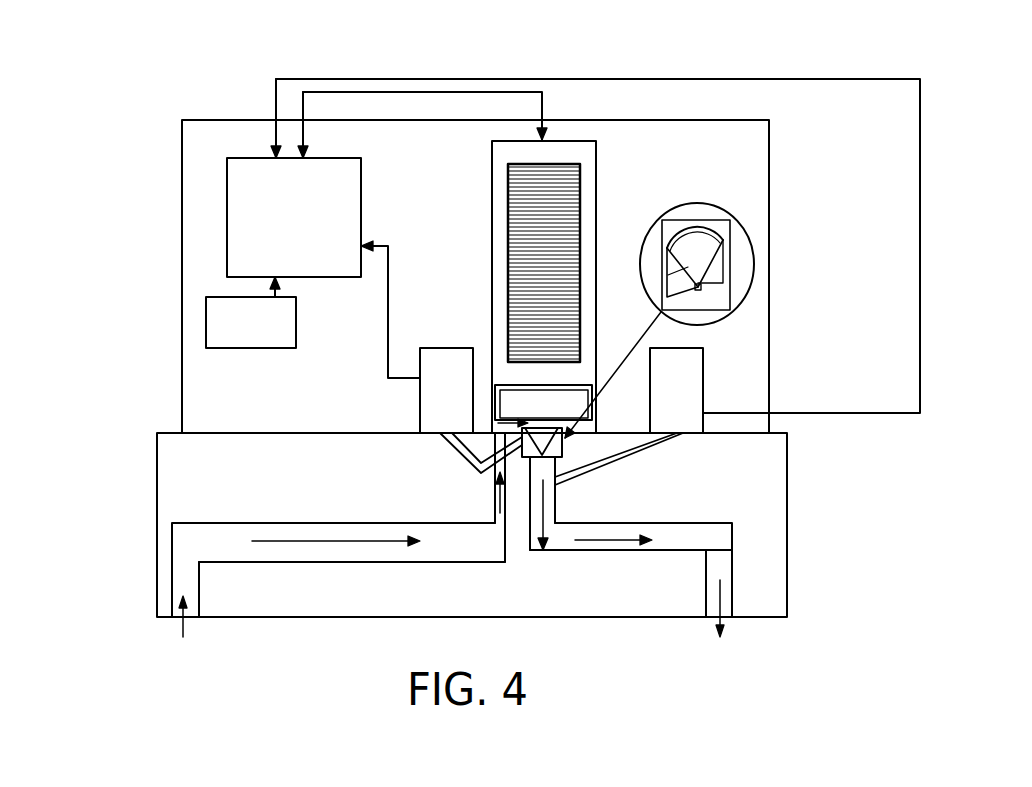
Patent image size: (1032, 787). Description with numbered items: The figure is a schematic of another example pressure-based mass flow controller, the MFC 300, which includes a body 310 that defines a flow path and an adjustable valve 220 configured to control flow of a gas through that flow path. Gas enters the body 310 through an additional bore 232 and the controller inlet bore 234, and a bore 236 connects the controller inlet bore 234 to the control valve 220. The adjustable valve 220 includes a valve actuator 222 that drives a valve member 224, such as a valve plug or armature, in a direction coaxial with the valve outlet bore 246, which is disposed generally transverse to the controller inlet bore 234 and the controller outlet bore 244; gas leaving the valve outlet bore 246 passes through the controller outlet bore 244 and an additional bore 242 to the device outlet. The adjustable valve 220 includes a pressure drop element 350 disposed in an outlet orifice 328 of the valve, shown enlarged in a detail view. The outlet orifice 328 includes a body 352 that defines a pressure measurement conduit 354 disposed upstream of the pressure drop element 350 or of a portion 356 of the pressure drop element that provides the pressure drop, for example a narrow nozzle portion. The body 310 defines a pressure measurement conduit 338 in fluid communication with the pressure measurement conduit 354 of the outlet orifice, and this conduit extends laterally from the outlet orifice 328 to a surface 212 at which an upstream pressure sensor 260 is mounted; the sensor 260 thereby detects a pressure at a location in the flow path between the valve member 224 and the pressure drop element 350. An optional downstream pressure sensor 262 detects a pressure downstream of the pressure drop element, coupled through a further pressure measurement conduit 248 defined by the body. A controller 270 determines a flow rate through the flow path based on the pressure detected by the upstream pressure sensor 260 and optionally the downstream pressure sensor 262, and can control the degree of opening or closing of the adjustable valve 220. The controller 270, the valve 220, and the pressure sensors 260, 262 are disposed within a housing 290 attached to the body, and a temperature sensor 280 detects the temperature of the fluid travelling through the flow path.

The mass flow controller 300 is at (68, 188).
The housing 290 is at (181, 173).
The controller 270 is at (317, 233).
The temperature sensor 280 is at (272, 333).
The adjustable valve 220 is at (597, 180).
The valve actuator 222 is at (517, 255).
The valve member 224 is at (507, 396).
The pressure drop element 350 is at (696, 202).
The body 352 is at (725, 252).
The pressure measurement conduit 354 is at (678, 268).
The portion of the pressure drop element 356 is at (702, 287).
The upstream pressure sensor 260 is at (415, 410).
The downstream pressure sensor 262 is at (737, 378).
The body 310 is at (173, 460).
The surface 212 is at (253, 431).
The pressure measurement conduit 338 is at (452, 452).
The outlet orifice 328 is at (563, 450).
The pressure measurement conduit 248 is at (568, 478).
The bore 236 is at (493, 498).
The controller inlet bore 234 is at (293, 523).
The additional bore 232 is at (170, 590).
The valve outlet bore 246 is at (528, 550).
The controller outlet bore 244 is at (602, 552).
The additional bore 242 is at (733, 587).